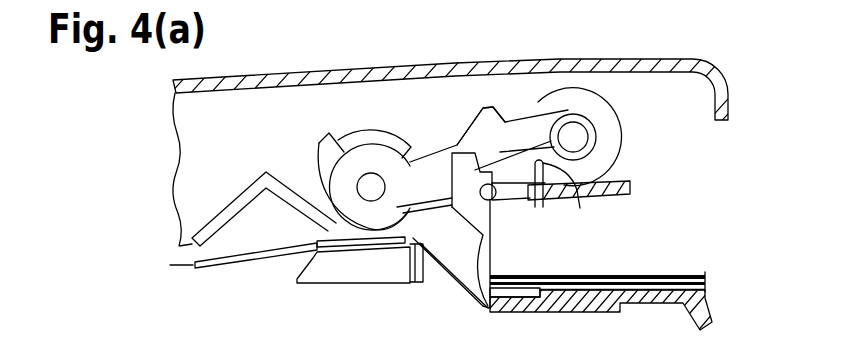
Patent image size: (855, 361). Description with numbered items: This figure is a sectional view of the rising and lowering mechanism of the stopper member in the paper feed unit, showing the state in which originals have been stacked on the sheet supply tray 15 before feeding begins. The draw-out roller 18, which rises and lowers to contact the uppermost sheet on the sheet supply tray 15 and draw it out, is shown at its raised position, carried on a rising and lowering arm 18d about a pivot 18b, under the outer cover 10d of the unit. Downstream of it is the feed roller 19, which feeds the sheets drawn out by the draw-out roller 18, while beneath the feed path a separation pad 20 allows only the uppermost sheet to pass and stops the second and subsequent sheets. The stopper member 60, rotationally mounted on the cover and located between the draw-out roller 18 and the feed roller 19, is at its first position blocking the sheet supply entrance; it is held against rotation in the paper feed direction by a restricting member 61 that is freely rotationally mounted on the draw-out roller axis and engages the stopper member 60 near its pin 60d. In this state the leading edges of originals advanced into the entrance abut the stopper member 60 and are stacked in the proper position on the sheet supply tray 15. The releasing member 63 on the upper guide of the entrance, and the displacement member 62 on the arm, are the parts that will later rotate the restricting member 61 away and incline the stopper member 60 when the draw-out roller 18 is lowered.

The top cover of housing 10d is at (295, 72).
The feed roller 19 is at (355, 133).
The draw-out roller 18 is at (597, 100).
The pivot shaft of lever 18b is at (575, 138).
The arm of lever 18d is at (427, 163).
The displacement member 62 is at (493, 115).
The stopper member 60 is at (483, 233).
The pin of pawl 60d is at (492, 200).
The restricting member 61 is at (518, 152).
The releasing member 63 is at (567, 190).
The separation pad 20 is at (333, 272).
The sheet supply tray 15 is at (640, 290).